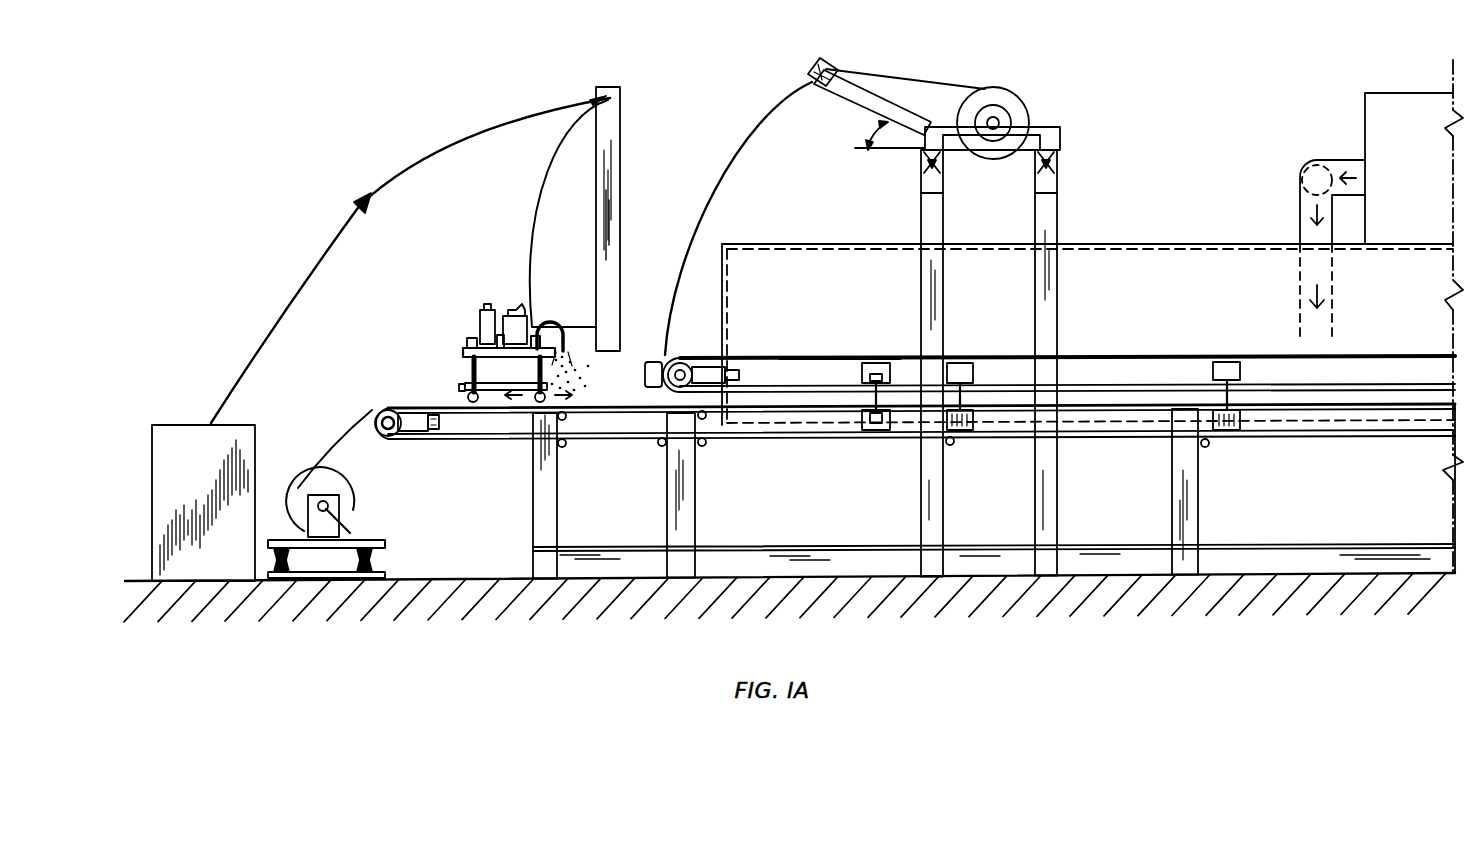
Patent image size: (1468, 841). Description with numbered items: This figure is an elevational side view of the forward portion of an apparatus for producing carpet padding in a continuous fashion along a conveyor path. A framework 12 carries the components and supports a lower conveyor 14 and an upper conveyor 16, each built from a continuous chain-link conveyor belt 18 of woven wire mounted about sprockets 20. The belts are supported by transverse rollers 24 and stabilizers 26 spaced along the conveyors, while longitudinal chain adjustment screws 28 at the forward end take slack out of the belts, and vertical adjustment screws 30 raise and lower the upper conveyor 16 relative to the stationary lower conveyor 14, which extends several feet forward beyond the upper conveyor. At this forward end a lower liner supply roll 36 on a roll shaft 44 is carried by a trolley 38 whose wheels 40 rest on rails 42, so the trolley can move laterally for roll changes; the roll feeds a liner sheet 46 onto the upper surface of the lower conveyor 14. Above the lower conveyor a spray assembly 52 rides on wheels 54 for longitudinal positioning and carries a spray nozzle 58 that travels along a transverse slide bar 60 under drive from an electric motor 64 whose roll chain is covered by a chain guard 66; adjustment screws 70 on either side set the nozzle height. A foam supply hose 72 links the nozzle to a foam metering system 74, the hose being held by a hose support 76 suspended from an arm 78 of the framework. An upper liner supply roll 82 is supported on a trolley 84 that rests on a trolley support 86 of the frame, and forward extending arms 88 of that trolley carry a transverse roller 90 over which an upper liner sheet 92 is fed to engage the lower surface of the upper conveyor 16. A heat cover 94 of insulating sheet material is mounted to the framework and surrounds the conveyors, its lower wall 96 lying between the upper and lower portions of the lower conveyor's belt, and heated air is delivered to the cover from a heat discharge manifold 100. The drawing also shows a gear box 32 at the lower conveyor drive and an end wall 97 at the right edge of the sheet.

The framework 12 is at (1058, 266).
The lower conveyor 14 is at (506, 418).
The upper conveyor 16 is at (1104, 122).
The conveyor belt 18 is at (453, 443).
The sprockets 20 is at (396, 409).
The transverse rollers 24 is at (703, 446).
The stabilizers 26 is at (963, 364).
The longitudinal chain adjustment screws 28 is at (718, 363).
The vertical adjustment screws 30 is at (877, 364).
The gear box 32 is at (427, 412).
The lower liner supply roll 36 is at (375, 578).
The trolley 38 is at (388, 552).
The wheels 40 is at (288, 553).
The rails 42 is at (270, 577).
The roll shaft 44 is at (353, 510).
The liner sheet 46 is at (333, 430).
The spray assembly 52 is at (483, 300).
The wheels 54 is at (531, 441).
The spray nozzle 58 is at (598, 323).
The transverse slide bar 60 is at (552, 337).
The electric motor 64 is at (496, 308).
The chain guard 66 is at (528, 329).
The adjustment screws 70 is at (568, 383).
The foam supply hose 72 is at (498, 125).
The foam metering system 74 is at (188, 427).
The hose support 76 is at (620, 92).
The arm 78 is at (613, 165).
The upper liner supply roll 82 is at (1018, 118).
The trolley 84 is at (1060, 128).
The trolley support 86 is at (1048, 206).
The forward extending arms 88 is at (863, 92).
The transverse roller 90 is at (836, 74).
The upper liner sheet 92 is at (722, 172).
The heat cover 94 is at (1206, 244).
The lower wall 96 is at (1297, 424).
The wall 97 is at (1420, 132).
The heat discharge manifold 100 is at (1300, 200).